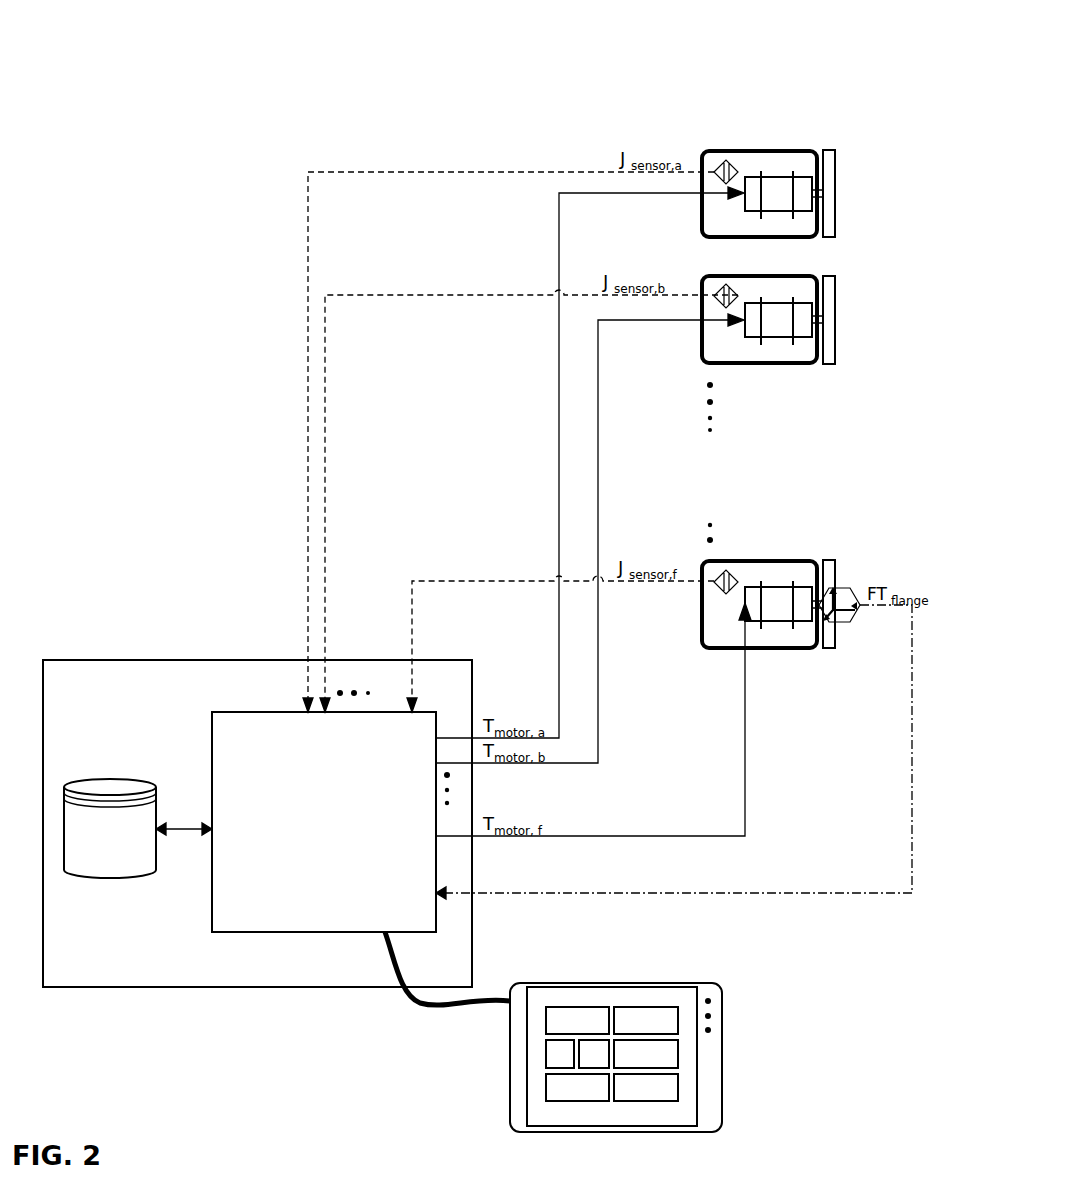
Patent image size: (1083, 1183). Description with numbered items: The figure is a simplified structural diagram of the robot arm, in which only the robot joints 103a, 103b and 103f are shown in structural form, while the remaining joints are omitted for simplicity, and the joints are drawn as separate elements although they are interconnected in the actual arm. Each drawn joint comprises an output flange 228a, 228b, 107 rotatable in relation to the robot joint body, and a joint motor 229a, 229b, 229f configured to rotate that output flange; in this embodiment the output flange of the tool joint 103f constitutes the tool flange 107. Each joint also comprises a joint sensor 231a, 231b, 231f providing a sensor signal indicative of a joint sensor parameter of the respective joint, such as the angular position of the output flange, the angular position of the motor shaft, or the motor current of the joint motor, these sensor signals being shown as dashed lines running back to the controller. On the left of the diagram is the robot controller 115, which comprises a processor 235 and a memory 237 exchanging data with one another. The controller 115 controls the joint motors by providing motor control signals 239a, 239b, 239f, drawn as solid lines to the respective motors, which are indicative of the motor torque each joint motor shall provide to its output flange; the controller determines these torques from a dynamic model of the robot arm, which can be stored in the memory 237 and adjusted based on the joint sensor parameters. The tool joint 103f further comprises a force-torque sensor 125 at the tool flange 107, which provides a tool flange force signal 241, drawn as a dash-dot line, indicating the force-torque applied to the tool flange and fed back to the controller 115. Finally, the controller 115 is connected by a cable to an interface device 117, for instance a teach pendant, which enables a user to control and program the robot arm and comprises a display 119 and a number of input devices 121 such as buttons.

The robot joint 103a is at (757, 152).
The robot joint 103b is at (722, 365).
The tool joint 103f is at (737, 560).
The tool flange 107 is at (828, 560).
The robot controller 115 is at (232, 660).
The interface device 117 is at (508, 1025).
The display 119 is at (615, 985).
The input devices 121 is at (717, 1000).
The force-torque sensor 125 is at (858, 588).
The output flange 228a is at (834, 150).
The output flange 228b is at (829, 320).
The joint motor 229a is at (772, 192).
The joint motor 229b is at (778, 330).
The joint motor 229f is at (780, 607).
The joint sensor 231a is at (708, 155).
The joint sensor 231b is at (710, 277).
The joint sensor 231f is at (713, 570).
The processor 235 is at (258, 873).
The memory 237 is at (115, 855).
The motor control signal 239a is at (559, 650).
The motor control signal 239b is at (598, 650).
The motor control signal 239f is at (610, 836).
The tool flange force signal 241 is at (678, 893).